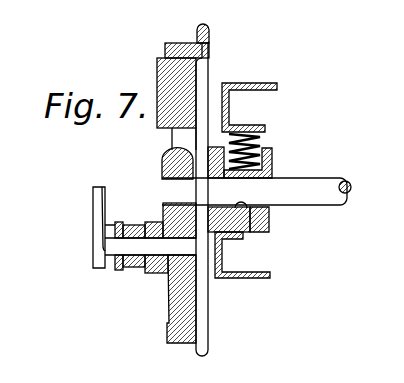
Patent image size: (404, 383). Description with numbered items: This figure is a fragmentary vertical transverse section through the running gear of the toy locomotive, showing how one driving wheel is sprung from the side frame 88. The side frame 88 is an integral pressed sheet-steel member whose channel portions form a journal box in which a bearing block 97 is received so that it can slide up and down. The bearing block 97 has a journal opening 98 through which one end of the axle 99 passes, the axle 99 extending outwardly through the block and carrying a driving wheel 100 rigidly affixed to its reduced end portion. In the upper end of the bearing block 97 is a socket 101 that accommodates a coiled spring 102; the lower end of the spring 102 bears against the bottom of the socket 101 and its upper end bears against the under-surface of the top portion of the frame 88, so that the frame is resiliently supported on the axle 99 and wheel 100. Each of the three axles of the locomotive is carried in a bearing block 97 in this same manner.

The side frame 88 is at (277, 87).
The coiled spring 102 is at (263, 141).
The socket 101 is at (267, 149).
The axle 99 is at (317, 188).
The bearing block 97 is at (253, 230).
The journal opening 98 is at (248, 235).
The driving wheel 100 is at (196, 331).